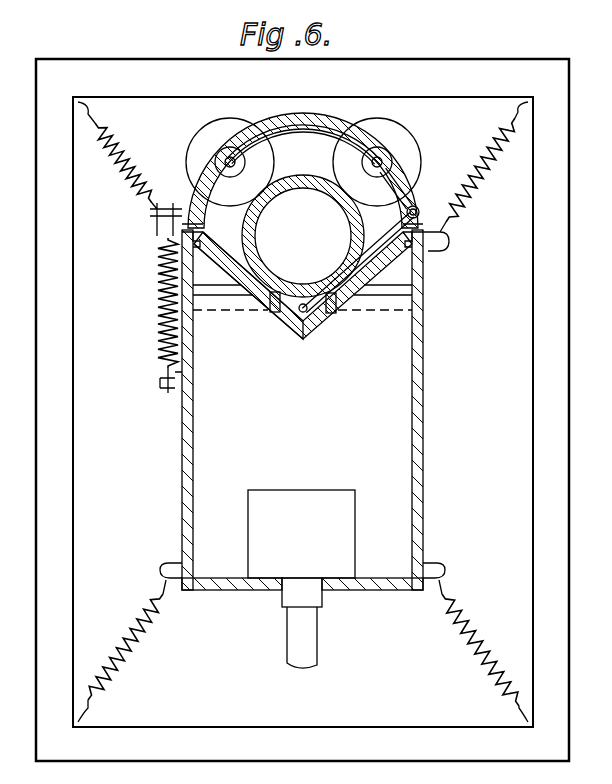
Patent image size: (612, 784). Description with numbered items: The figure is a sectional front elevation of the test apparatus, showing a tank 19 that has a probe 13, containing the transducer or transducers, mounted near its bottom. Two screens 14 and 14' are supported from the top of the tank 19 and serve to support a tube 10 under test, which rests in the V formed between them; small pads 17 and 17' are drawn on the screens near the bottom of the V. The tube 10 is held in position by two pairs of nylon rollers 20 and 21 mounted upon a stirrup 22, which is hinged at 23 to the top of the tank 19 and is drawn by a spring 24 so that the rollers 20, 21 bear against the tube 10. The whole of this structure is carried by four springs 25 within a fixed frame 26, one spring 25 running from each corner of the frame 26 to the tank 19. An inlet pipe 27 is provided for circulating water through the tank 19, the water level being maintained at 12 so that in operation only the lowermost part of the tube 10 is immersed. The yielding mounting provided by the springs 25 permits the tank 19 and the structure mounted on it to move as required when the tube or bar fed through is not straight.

The tube 10 is at (313, 176).
The water level 12 is at (376, 281).
The probe 13 is at (301, 579).
The screen 14 is at (303, 285).
The screen 14' is at (248, 285).
The pad 17 is at (350, 316).
The pad 17' is at (262, 320).
The tank 19 is at (186, 440).
The nylon rollers 20 is at (205, 135).
The nylon rollers 21 is at (398, 134).
The stirrup 22 is at (343, 135).
The hinge 23 is at (418, 206).
The spring 24 is at (158, 288).
The springs 25 is at (142, 178).
The fixed frame 26 is at (62, 411).
The inlet pipe 27 is at (306, 313).